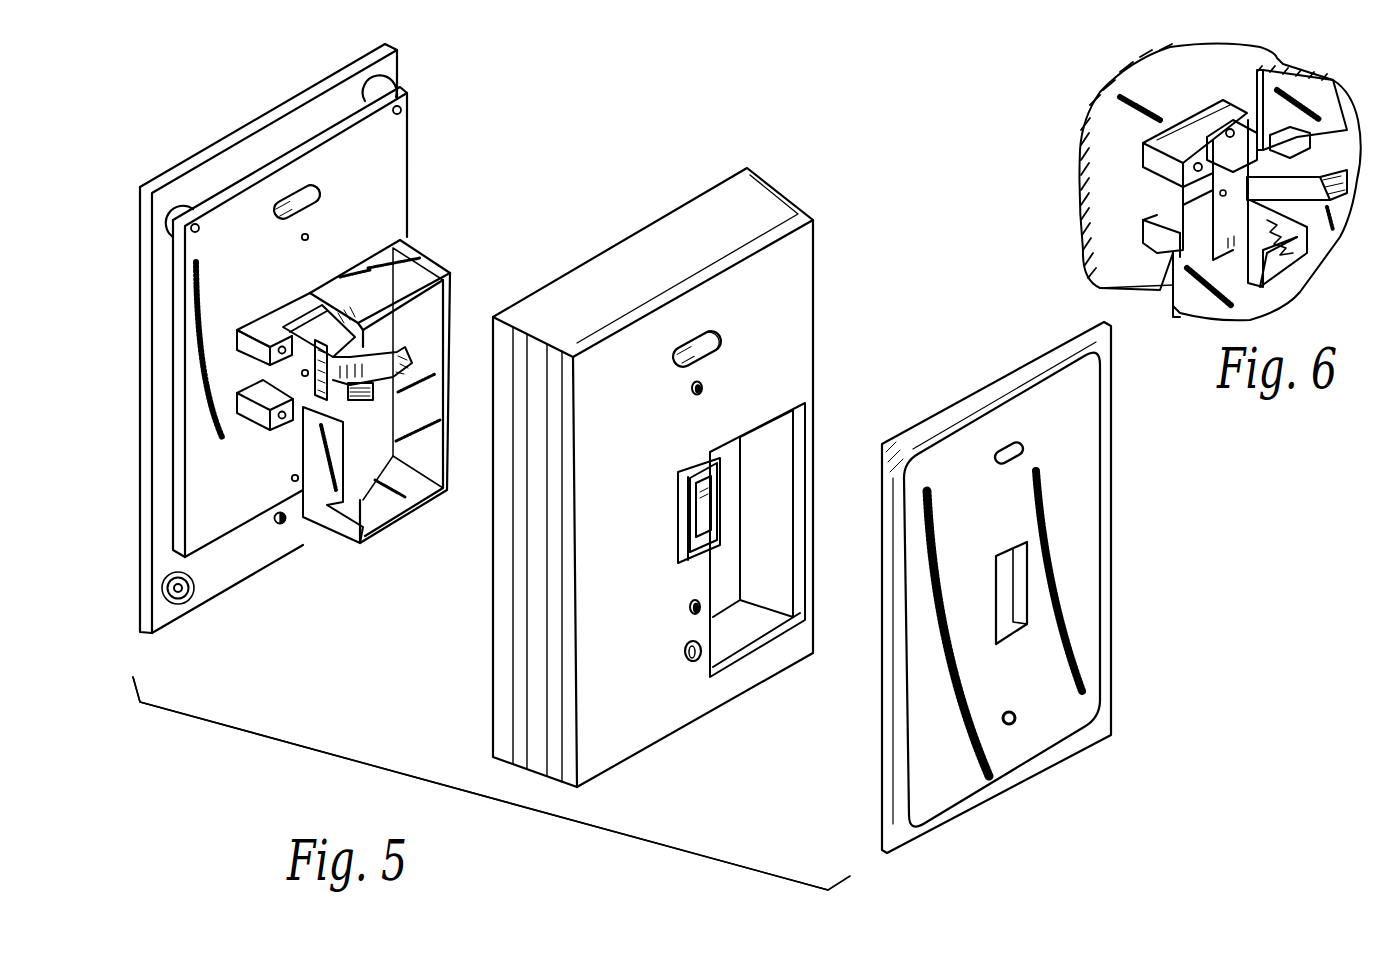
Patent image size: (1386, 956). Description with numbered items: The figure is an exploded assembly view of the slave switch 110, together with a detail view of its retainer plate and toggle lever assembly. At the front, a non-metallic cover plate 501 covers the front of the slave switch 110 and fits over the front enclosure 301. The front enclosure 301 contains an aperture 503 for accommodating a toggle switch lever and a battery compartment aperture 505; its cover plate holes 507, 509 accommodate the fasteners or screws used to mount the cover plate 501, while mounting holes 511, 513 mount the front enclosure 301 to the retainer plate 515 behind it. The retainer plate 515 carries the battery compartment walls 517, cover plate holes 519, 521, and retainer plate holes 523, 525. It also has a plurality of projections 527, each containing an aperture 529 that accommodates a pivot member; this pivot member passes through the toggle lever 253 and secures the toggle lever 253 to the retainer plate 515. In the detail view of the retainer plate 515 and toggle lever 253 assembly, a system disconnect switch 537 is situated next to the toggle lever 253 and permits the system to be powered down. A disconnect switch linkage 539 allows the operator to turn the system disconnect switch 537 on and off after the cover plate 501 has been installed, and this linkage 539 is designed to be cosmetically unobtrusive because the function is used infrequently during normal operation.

In FIG. 5, the slave switch 110 is at (235, 757).
In FIG. 5, the retainer plate 515 is at (407, 165).
In FIG. 5, the cover plate hole 519 is at (322, 194).
In FIG. 5, the retainer plate hole 523 is at (302, 239).
In FIG. 5, the battery compartment walls 517 is at (437, 263).
In FIG. 5, the toggle lever 253 is at (407, 357).
In FIG. 6, the toggle lever 253 is at (1337, 82).
In FIG. 5, the projections 527 is at (300, 371).
In FIG. 5, the apertures 529 is at (297, 372).
In FIG. 5, the retainer plate hole 525 is at (290, 478).
In FIG. 5, the cover plate hole 521 is at (275, 520).
In FIG. 5, the front enclosure 301 is at (813, 340).
In FIG. 5, the cover plate hole 507 is at (716, 333).
In FIG. 5, the mounting hole 511 is at (706, 386).
In FIG. 5, the battery compartment aperture 505 is at (790, 408).
In FIG. 5, the aperture 503 is at (678, 490).
In FIG. 5, the mounting hole 513 is at (690, 604).
In FIG. 5, the cover plate hole 509 is at (684, 654).
In FIG. 5, the cover plate 501 is at (1116, 462).
In FIG. 6, the system disconnect switch 537 is at (1180, 187).
In FIG. 6, the disconnect switch linkage 539 is at (1287, 297).